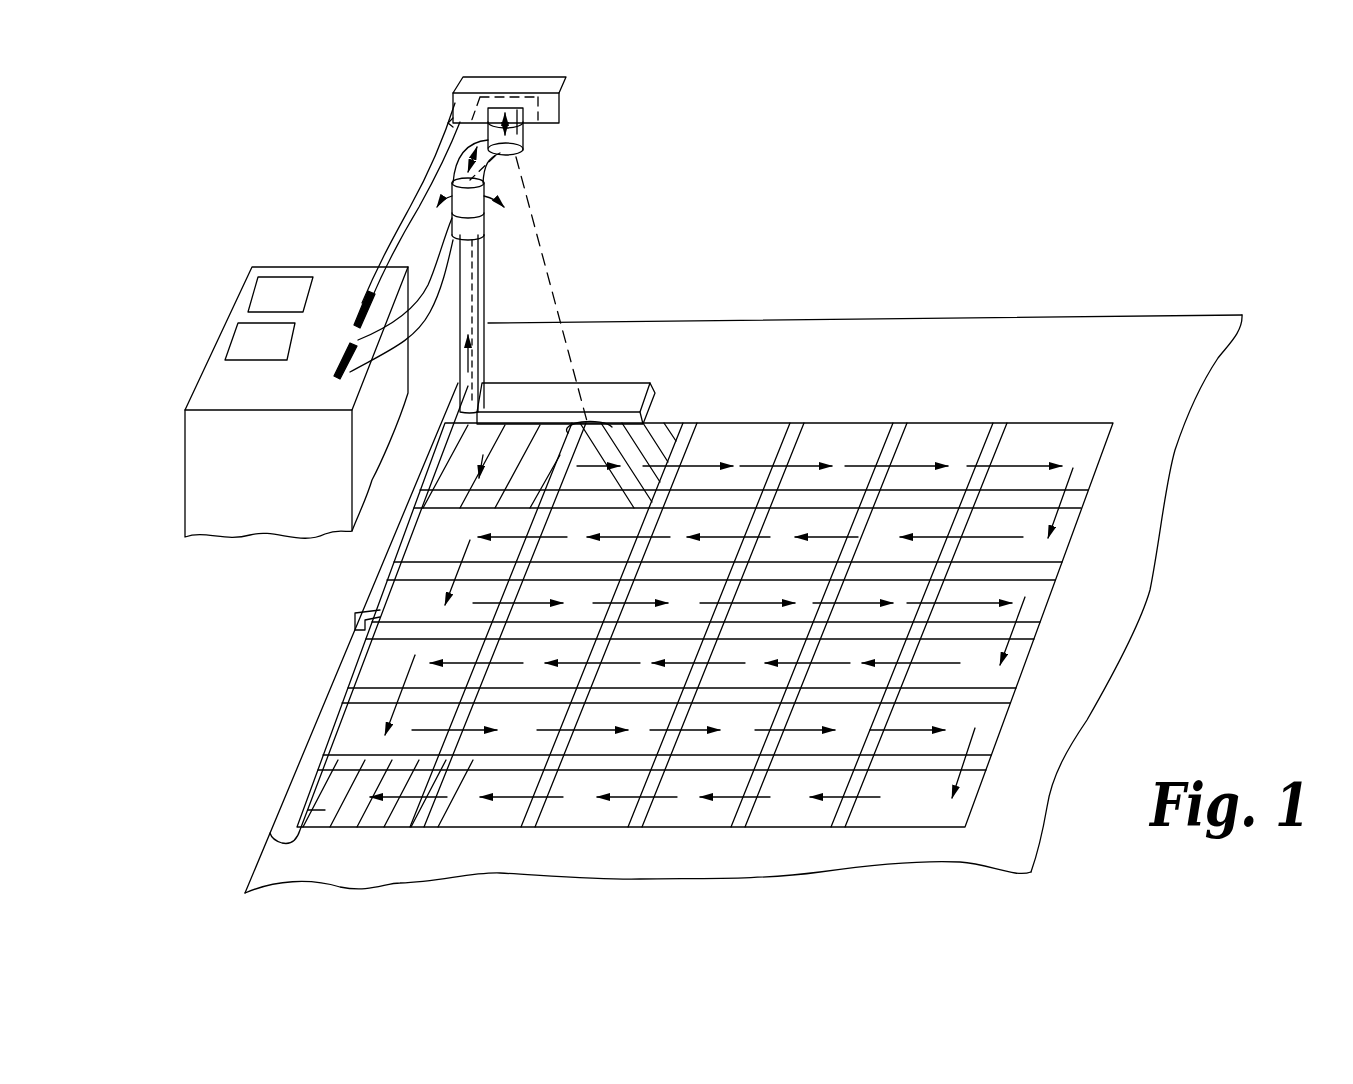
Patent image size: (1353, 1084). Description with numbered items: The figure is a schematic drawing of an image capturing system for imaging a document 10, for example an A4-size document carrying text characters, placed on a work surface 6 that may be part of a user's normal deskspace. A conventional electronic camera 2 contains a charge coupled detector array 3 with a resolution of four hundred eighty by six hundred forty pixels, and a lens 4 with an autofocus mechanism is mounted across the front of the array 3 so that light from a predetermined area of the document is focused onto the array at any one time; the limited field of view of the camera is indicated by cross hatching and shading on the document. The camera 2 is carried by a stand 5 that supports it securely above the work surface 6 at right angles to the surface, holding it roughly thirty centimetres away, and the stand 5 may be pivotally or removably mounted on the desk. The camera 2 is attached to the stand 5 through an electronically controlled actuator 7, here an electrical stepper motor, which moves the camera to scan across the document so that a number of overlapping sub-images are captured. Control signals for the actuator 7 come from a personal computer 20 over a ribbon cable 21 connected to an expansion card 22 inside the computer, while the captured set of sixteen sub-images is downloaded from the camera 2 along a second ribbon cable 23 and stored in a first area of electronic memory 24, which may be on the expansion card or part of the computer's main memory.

The electronic camera 2 is at (558, 108).
The charge coupled detector (CCD) array 3 is at (537, 112).
The lens 4 is at (527, 137).
The stand 5 is at (487, 318).
The work surface 6 is at (312, 757).
The electronically controlled actuator 7 is at (450, 187).
The document 10 is at (272, 836).
The personal computer 20 is at (190, 470).
The ribbon cable 21 is at (418, 328).
The expansion card 22 is at (357, 374).
The second ribbon cable 23 is at (400, 228).
The electronic memory 24 is at (228, 340).